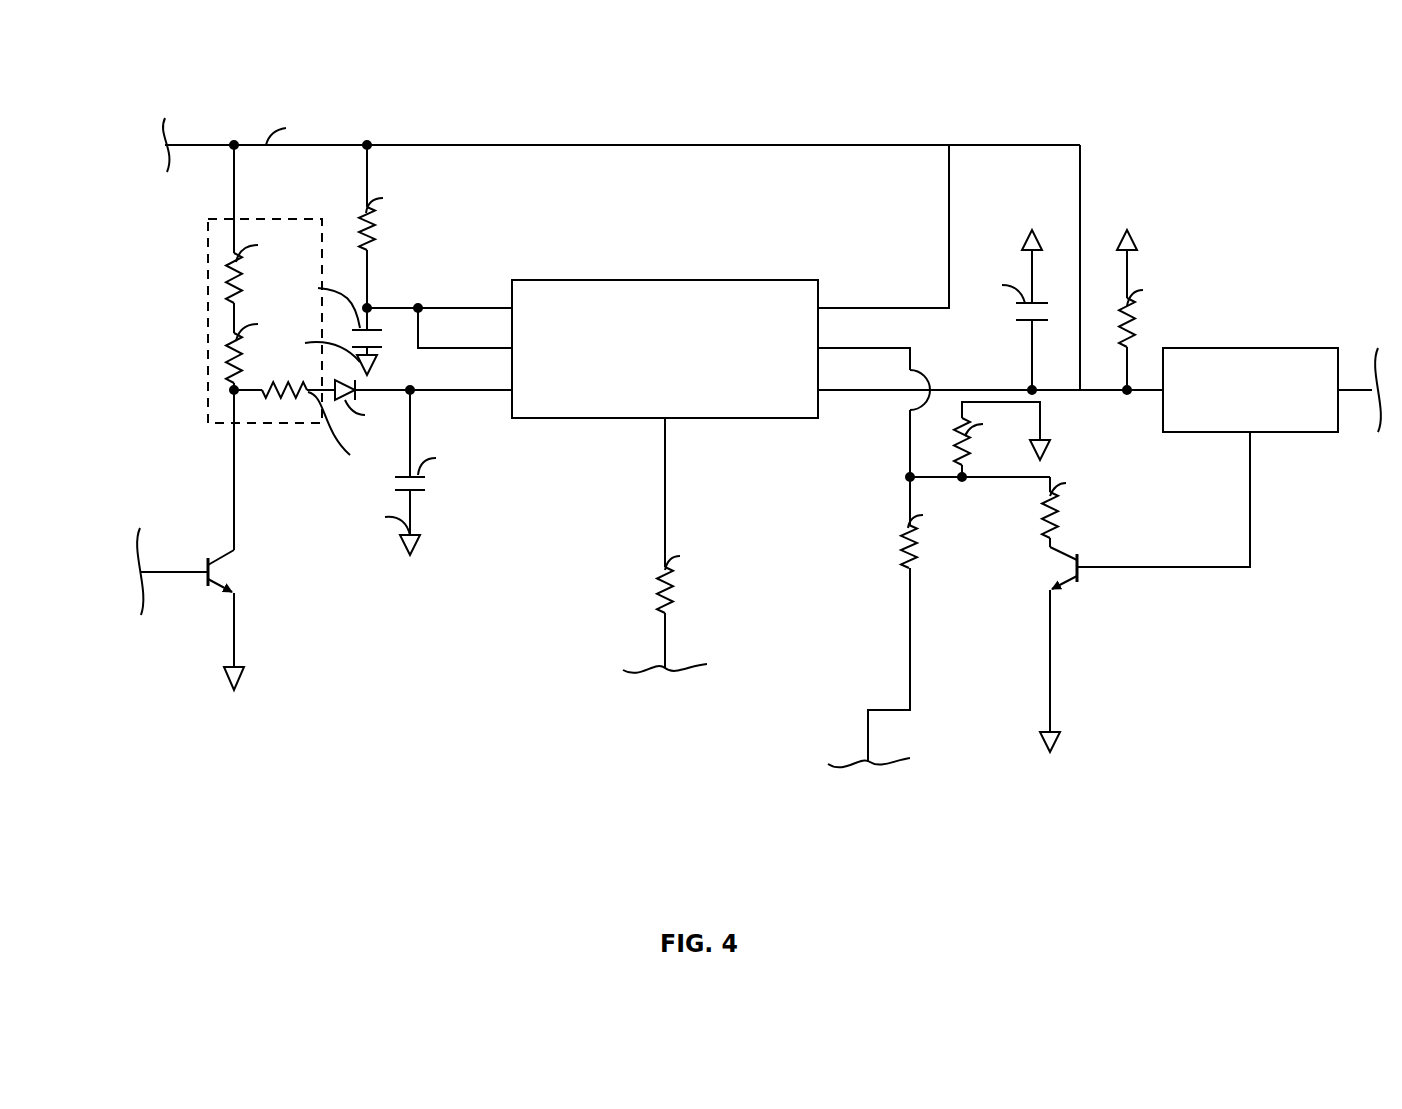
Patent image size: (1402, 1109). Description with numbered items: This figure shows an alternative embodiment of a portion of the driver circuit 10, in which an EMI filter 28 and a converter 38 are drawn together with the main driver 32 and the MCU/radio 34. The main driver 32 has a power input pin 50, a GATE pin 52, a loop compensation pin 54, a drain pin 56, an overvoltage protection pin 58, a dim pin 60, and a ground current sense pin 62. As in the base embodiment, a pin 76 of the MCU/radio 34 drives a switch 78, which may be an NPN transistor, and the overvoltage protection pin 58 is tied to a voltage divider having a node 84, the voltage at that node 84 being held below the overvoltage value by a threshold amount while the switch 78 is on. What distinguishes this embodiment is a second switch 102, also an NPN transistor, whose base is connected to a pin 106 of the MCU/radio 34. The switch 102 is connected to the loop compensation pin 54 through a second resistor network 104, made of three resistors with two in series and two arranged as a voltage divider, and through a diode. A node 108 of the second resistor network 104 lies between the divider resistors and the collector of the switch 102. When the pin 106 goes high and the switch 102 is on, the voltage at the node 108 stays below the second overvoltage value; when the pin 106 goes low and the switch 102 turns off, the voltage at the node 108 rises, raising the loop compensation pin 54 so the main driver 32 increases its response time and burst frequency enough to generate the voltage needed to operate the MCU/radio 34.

The driver circuit 10 is at (1168, 131).
The EMI filter 28 is at (108, 155).
The main driver 32 is at (557, 280).
The MCU/radio 34 is at (1207, 348).
The converter 38 is at (766, 781).
The power input pin 50 is at (410, 306).
The GATE pin 52 is at (437, 350).
The loop compensation pin 54 is at (502, 393).
The drain pin 56 is at (900, 306).
The overvoltage protection pin 58 is at (860, 350).
The dim pin 60 is at (833, 393).
The ground current sense pin 62 is at (667, 453).
The pin 76 is at (1250, 548).
The switch 78 is at (1070, 545).
The node 84 is at (962, 481).
The switch 102 is at (243, 583).
The second resistor network 104 is at (222, 214).
The pin 106 is at (1370, 394).
The node 108 is at (232, 391).